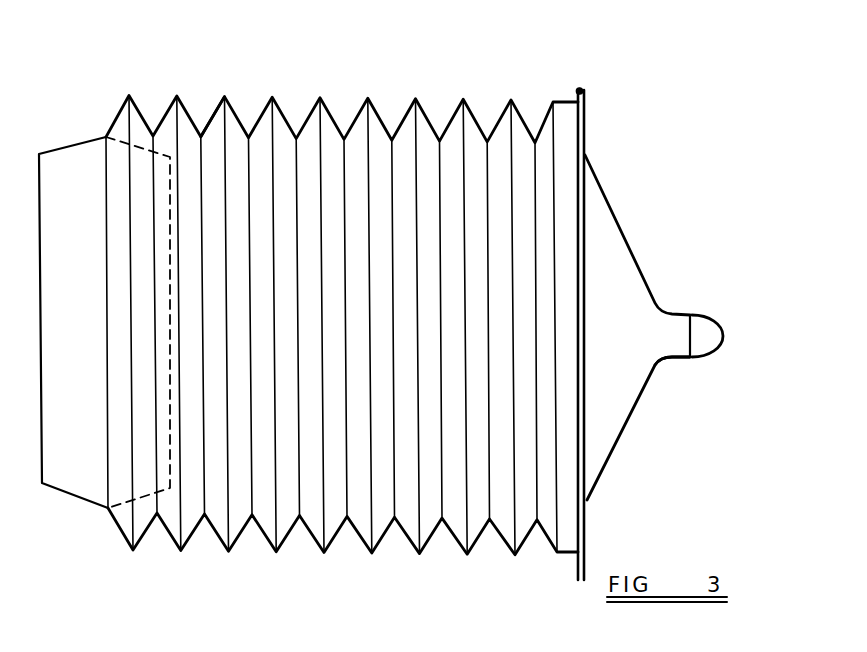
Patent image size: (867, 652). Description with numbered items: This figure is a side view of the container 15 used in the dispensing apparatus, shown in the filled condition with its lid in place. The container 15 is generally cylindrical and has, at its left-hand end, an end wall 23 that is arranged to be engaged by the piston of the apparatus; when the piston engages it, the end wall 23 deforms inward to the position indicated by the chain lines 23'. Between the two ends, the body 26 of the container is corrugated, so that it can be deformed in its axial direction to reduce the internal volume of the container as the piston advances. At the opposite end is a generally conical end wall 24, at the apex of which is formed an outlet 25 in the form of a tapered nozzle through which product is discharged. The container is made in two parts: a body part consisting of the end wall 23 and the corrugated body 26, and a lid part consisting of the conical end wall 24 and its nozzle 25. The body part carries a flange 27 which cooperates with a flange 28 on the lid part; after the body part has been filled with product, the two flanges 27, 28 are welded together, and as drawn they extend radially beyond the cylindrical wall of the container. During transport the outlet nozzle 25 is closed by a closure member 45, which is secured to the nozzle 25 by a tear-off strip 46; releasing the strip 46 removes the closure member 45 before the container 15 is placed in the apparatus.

The container 15 is at (347, 112).
The body 26 is at (212, 112).
The end wall 23 is at (67, 338).
The chain lines 23' is at (168, 367).
The flange 28 is at (585, 96).
The flange 27 is at (578, 89).
The conical end wall 24 is at (631, 421).
The outlet 25 is at (675, 361).
The closure member 45 is at (718, 348).
The tear-off strip 46 is at (694, 352).